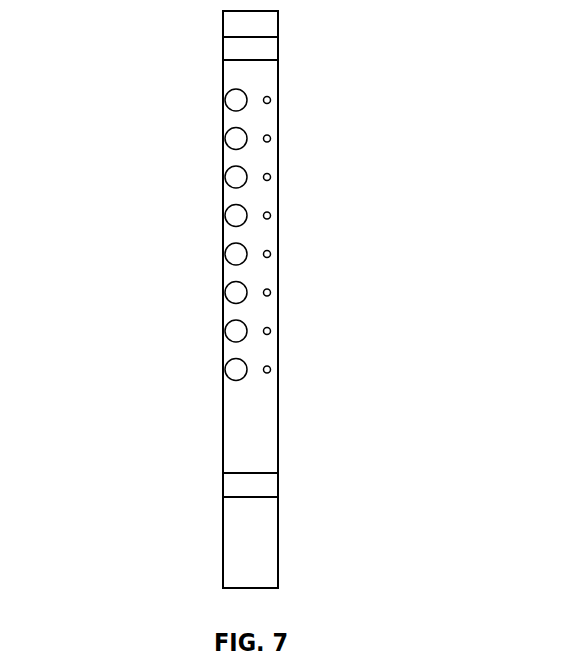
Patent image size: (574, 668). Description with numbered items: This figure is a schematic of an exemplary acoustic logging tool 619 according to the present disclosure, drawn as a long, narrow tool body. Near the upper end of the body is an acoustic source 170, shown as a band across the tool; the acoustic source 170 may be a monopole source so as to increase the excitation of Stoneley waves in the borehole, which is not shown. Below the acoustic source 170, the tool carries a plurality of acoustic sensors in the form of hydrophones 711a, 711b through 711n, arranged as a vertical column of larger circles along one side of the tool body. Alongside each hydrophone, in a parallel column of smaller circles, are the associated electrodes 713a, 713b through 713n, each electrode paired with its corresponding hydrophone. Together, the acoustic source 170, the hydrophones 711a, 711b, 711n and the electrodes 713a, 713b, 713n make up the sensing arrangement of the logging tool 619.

The logging tool 619 is at (185, 32).
The acoustic source 170 is at (272, 50).
The hydrophone 711a is at (226, 97).
The hydrophone 711b is at (226, 135).
The hydrophone 711n is at (226, 366).
The electrode 713a is at (271, 100).
The electrode 713b is at (271, 138).
The electrode 713n is at (271, 370).